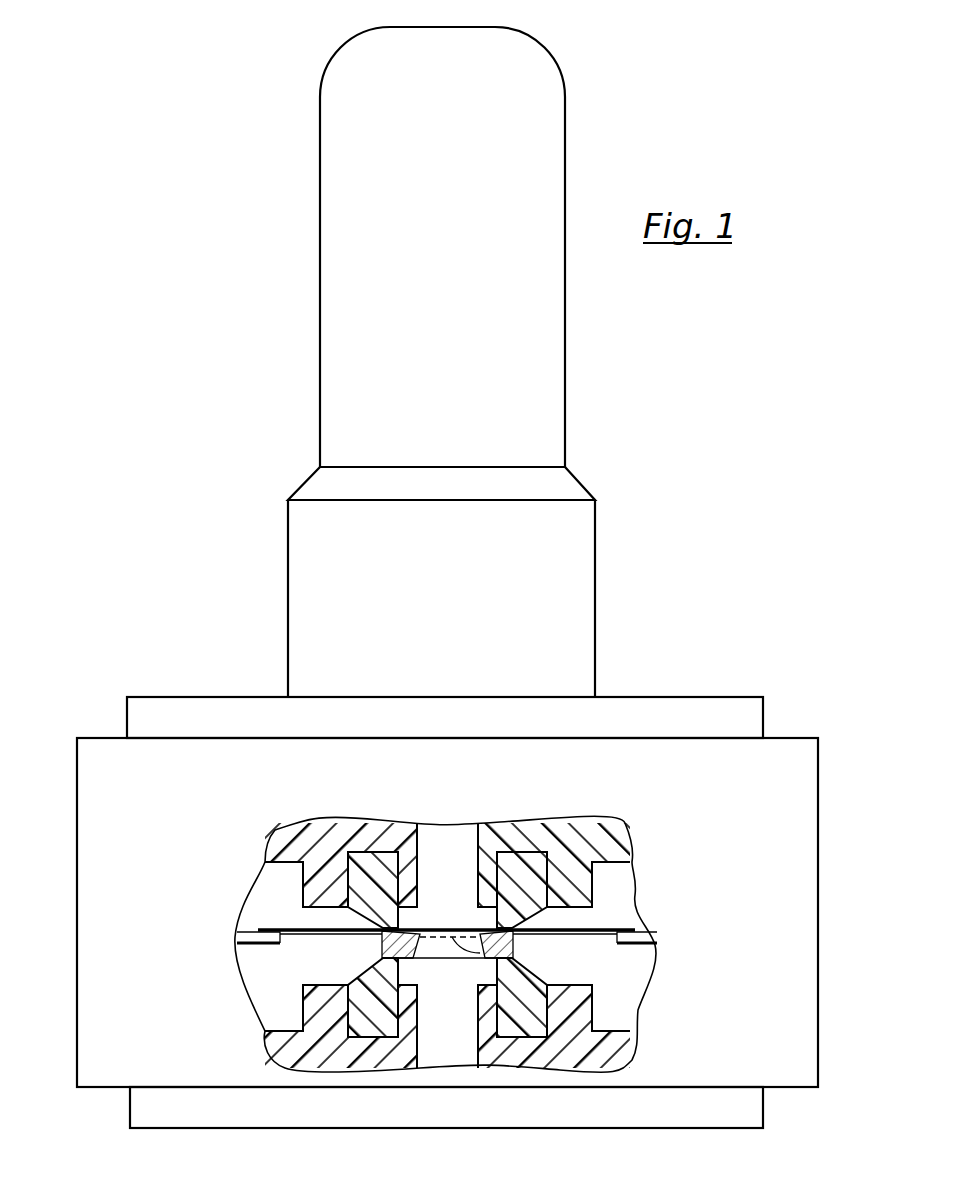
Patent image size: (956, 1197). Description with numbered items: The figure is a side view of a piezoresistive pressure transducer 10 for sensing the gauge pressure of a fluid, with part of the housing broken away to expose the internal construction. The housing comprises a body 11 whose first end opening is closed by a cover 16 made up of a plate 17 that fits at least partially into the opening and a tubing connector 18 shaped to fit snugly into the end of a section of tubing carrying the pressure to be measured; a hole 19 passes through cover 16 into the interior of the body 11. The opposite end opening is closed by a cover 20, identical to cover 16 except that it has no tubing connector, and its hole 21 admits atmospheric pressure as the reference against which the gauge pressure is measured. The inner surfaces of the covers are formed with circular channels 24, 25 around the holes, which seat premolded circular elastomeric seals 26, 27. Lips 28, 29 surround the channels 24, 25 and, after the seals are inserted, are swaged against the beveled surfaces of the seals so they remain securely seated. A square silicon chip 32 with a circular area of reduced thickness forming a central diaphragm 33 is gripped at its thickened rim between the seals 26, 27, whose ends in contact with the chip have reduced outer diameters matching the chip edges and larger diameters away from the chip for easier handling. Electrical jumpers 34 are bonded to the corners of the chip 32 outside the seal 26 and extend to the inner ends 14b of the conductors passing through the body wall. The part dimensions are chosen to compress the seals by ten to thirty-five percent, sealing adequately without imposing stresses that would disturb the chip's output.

The piezoresistive pressure transducer 10 is at (163, 604).
The body 11 is at (84, 726).
The inner ends of the conductors 14b is at (235, 950).
The cover 16 is at (255, 650).
The plate 17 is at (157, 697).
The tubing connector 18 is at (320, 264).
The hole 19 is at (500, 832).
The cover 20 is at (247, 1141).
The hole 21 is at (507, 1047).
The channel 24 is at (350, 888).
The channel 25 is at (350, 1008).
The elastomeric seal 26 is at (520, 914).
The elastomeric seal 27 is at (540, 987).
The lip 28 is at (350, 918).
The lip 29 is at (350, 985).
The chip 32 is at (382, 946).
The central diaphragm 33 is at (515, 946).
The electrical jumpers 34 is at (313, 935).